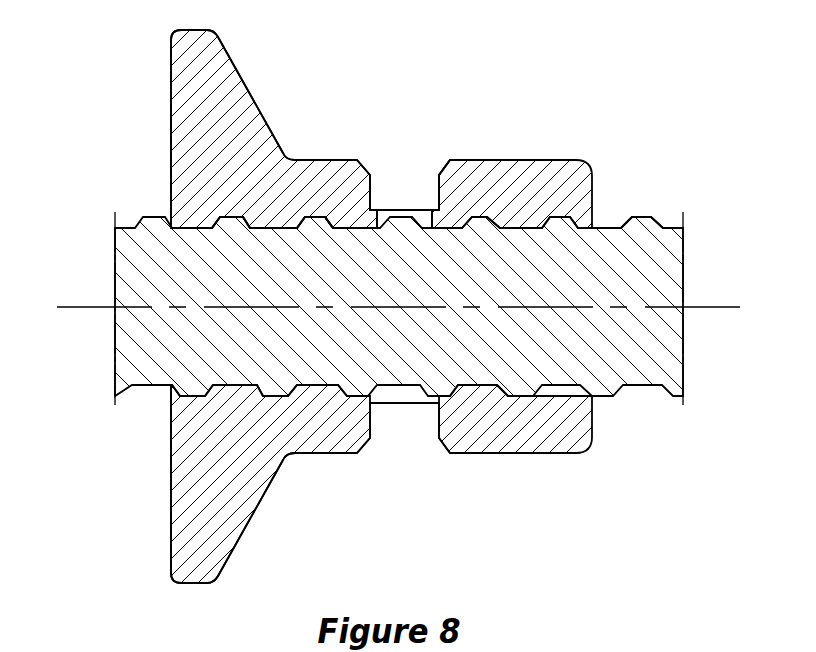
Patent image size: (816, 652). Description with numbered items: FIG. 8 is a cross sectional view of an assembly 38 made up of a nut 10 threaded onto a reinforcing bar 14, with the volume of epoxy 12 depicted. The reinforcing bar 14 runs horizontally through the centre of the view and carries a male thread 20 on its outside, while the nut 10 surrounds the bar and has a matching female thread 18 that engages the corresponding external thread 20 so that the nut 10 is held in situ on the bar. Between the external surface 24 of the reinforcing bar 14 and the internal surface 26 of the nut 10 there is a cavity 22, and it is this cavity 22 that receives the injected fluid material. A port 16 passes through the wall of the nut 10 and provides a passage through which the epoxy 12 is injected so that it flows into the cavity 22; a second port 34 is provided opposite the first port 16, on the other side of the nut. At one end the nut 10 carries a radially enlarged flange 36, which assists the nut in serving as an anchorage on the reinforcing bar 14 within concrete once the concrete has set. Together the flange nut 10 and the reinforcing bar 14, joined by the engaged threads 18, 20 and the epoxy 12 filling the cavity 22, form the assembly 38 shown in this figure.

The nut 10 is at (574, 187).
The epoxy 12 is at (403, 202).
The reinforcing bar 14 is at (640, 264).
The port 16 is at (428, 164).
The female thread 18 is at (338, 218).
The male thread 20 is at (638, 218).
The cavity 22 is at (341, 222).
The external surface 24 is at (273, 229).
The internal surface 26 is at (243, 219).
The second port 34 is at (403, 410).
The flange 36 is at (252, 97).
The assembly 38 is at (515, 124).